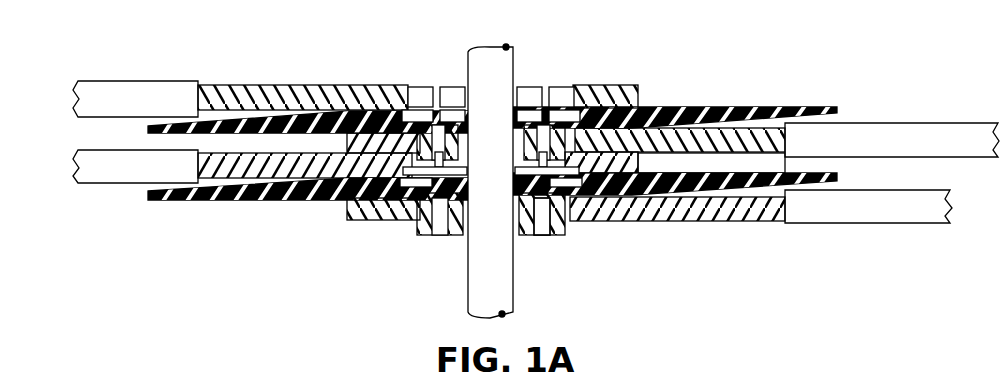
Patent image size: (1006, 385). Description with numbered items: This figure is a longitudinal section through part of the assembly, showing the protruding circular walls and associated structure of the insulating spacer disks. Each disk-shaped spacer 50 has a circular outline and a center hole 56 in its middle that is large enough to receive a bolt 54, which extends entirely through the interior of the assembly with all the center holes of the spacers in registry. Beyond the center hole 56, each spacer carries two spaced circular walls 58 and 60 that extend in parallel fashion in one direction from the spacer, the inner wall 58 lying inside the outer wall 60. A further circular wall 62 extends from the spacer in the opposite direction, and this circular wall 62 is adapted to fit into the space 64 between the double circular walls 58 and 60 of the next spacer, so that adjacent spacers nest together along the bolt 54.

The disk-shaped spacer 50 is at (733, 107).
The bolt 54 is at (505, 70).
The center hole 56 is at (468, 137).
The inner circular wall 58 is at (556, 148).
The outer circular wall 60 is at (632, 125).
The circular wall 62 is at (558, 95).
The space 64 is at (545, 225).